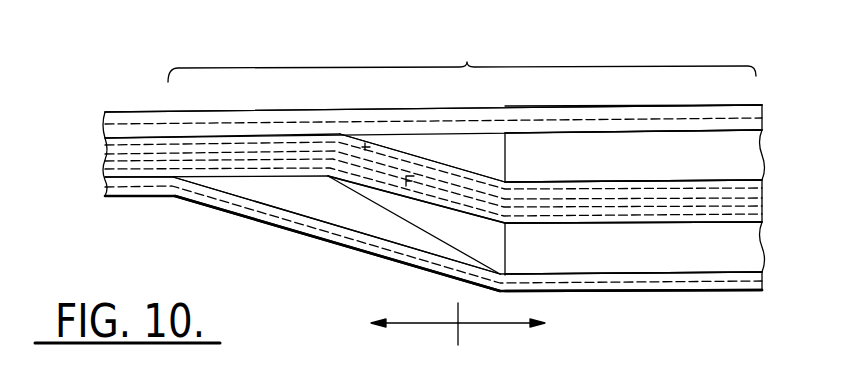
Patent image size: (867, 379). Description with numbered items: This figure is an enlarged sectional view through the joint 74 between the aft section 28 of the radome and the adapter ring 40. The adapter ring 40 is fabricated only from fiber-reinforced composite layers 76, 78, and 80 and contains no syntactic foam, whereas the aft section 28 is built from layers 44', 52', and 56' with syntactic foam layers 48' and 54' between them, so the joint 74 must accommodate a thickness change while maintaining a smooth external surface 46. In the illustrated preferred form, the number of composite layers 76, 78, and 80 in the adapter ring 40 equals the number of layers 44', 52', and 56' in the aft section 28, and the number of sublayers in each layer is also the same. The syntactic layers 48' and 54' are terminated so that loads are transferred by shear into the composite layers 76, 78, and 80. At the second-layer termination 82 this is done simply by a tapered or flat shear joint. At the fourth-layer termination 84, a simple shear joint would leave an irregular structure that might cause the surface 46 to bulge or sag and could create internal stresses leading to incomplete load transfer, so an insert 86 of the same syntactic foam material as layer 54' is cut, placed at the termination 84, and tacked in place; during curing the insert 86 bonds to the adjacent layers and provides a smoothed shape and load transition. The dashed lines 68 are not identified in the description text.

The joint 74 is at (462, 55).
The adhesive layer 68 is at (317, 117).
The external surface 46 is at (437, 107).
The fiber-reinforced composite layer 76 is at (100, 112).
The fiber-reinforced composite layer 78 is at (100, 140).
The fiber-reinforced composite layer 80 is at (100, 179).
The second-layer termination 82 is at (437, 162).
The fourth-layer termination 84 is at (437, 239).
The insert 86 is at (394, 228).
The adapter ring 40 is at (414, 331).
The aft section 28 is at (501, 339).
The layer 44' is at (665, 117).
The syntactic foam layer 48' is at (665, 156).
The layer 52' is at (665, 201).
The syntactic foam layer 54' is at (665, 248).
The layer 56' is at (665, 280).